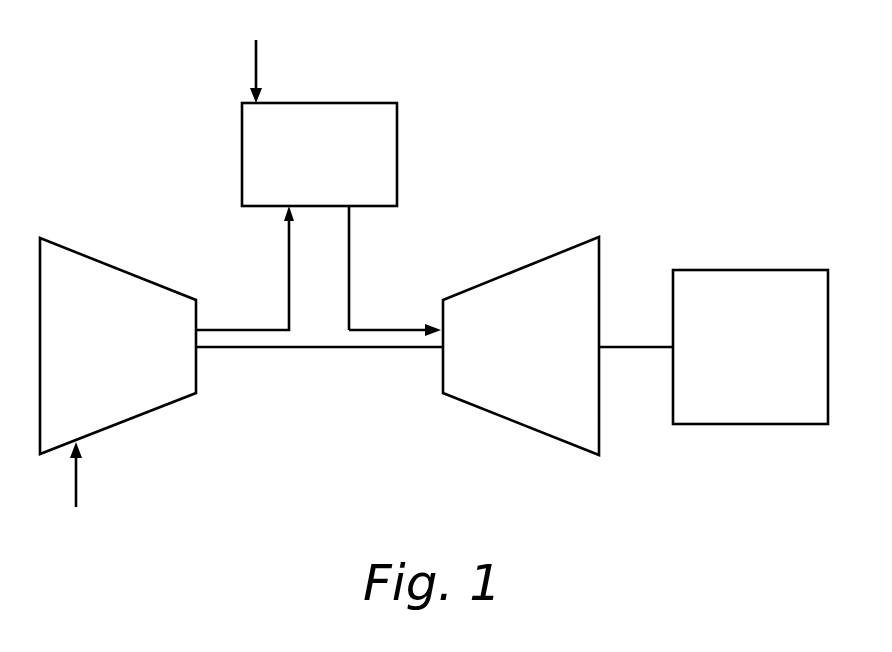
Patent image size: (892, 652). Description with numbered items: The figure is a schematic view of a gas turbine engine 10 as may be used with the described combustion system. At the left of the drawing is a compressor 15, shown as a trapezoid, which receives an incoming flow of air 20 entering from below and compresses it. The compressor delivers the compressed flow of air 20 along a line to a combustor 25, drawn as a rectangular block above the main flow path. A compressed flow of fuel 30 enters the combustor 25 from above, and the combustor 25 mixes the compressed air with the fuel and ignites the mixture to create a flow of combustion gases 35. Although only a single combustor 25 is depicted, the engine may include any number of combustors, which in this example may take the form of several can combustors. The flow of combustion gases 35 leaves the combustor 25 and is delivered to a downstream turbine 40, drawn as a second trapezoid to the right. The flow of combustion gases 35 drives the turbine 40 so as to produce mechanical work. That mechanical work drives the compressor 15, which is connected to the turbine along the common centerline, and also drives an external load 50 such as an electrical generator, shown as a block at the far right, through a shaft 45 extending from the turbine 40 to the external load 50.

The gas turbine engine 10 is at (86, 144).
The compressor 15 is at (129, 354).
The flow of air 20 is at (76, 480).
The combustor 25 is at (331, 163).
The compressed flow of fuel 30 is at (256, 65).
The flow of combustion gases 35 is at (385, 330).
The turbine 40 is at (532, 354).
The shaft 45 is at (630, 332).
The external load 50 is at (762, 354).